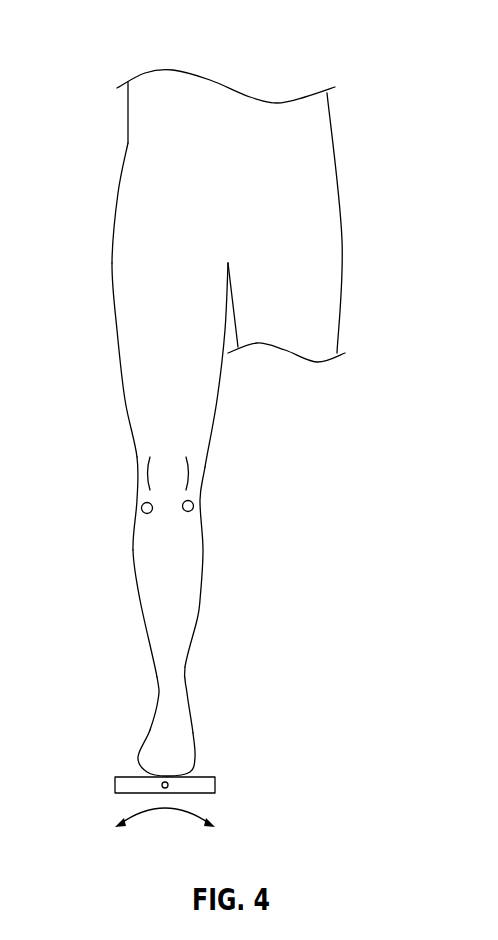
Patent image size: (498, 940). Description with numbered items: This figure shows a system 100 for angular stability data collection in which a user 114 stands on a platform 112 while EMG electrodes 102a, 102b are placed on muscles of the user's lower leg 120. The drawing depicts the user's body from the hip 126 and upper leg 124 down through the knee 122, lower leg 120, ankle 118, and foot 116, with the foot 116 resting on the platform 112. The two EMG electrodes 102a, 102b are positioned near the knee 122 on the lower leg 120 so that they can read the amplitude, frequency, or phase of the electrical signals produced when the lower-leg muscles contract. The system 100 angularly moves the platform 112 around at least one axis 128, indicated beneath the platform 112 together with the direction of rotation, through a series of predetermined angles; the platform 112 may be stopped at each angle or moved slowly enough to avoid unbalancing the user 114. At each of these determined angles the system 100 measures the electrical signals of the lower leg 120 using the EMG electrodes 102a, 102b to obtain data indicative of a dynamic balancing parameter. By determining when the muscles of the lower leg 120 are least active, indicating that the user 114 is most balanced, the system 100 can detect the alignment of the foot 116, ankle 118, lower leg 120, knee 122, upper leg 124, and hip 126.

The system for angular stability data collection 100 is at (336, 47).
The EMG electrode 102a is at (141, 507).
The EMG electrode 102b is at (195, 505).
The platform 112 is at (217, 785).
The user 114 is at (127, 103).
The foot 116 is at (193, 760).
The ankle 118 is at (158, 697).
The lower leg 120 is at (203, 590).
The knee 122 is at (192, 477).
The upper leg 124 is at (112, 275).
The hip 126 is at (125, 142).
The axis 128 is at (162, 786).